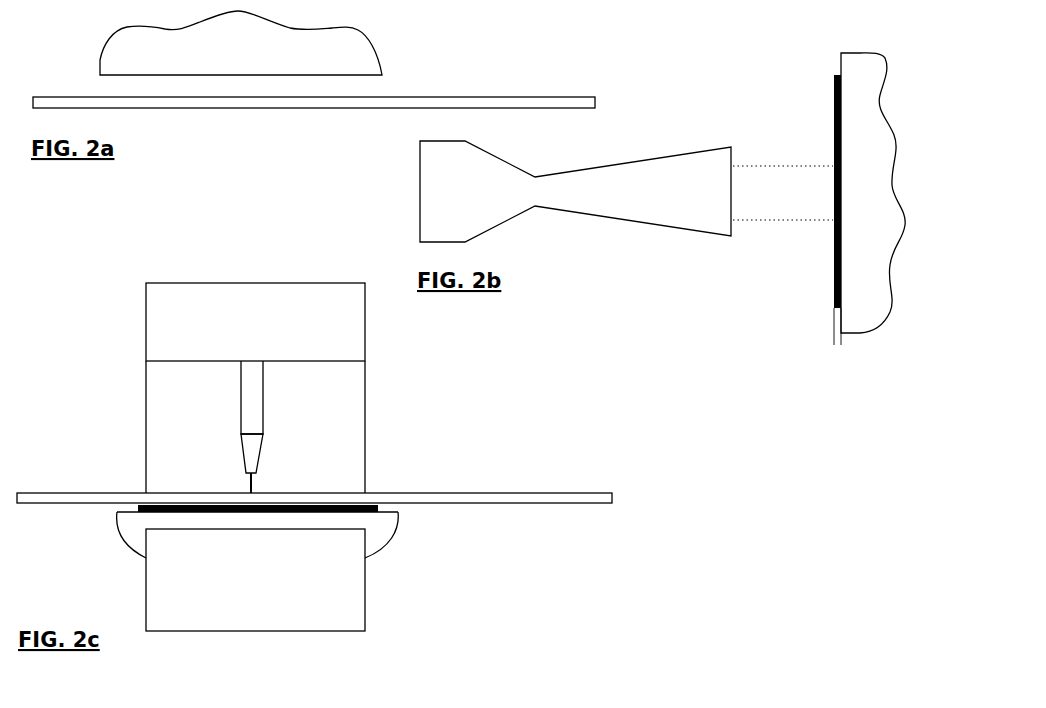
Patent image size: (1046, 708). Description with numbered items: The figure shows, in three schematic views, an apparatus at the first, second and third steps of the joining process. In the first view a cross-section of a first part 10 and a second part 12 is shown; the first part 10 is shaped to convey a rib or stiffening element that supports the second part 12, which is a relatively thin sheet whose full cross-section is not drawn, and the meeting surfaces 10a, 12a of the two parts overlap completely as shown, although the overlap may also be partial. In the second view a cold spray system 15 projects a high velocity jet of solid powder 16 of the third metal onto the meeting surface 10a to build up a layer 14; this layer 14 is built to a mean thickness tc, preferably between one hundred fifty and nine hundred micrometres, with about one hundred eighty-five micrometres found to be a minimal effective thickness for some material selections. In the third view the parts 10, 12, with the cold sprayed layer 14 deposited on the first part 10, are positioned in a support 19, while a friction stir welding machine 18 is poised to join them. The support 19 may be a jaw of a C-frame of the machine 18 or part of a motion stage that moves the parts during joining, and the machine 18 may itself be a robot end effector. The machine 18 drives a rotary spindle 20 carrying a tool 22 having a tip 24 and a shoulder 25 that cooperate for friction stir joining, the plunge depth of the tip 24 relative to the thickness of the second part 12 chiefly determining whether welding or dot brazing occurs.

In FIG. 2a, the first part 10 is at (241, 43).
In FIG. 2b, the first part 10 is at (873, 193).
In FIG. 2c, the first part 10 is at (380, 540).
In FIG. 2a, the meeting surface of first part 10a is at (365, 79).
In FIG. 2a, the second part 12 is at (465, 103).
In FIG. 2c, the second part 12 is at (437, 497).
In FIG. 2a, the meeting surface of second part 12a is at (141, 94).
In FIG. 2b, the layer 14 is at (833, 257).
In FIG. 2c, the layer 14 is at (136, 510).
In FIG. 2b, the cold spray system 15 is at (575, 191).
In FIG. 2b, the high velocity jet of solid powder 16 is at (783, 193).
In FIG. 2c, the friction stir welding machine 18 is at (255, 388).
In FIG. 2c, the support 19 is at (255, 580).
In FIG. 2c, the rotary spindle 20 is at (247, 393).
In FIG. 2c, the tool 22 is at (255, 447).
In FIG. 2c, the tip 24 is at (248, 484).
In FIG. 2c, the shoulder 25 is at (259, 478).
In FIG. 2b, the thickness tc is at (858, 340).